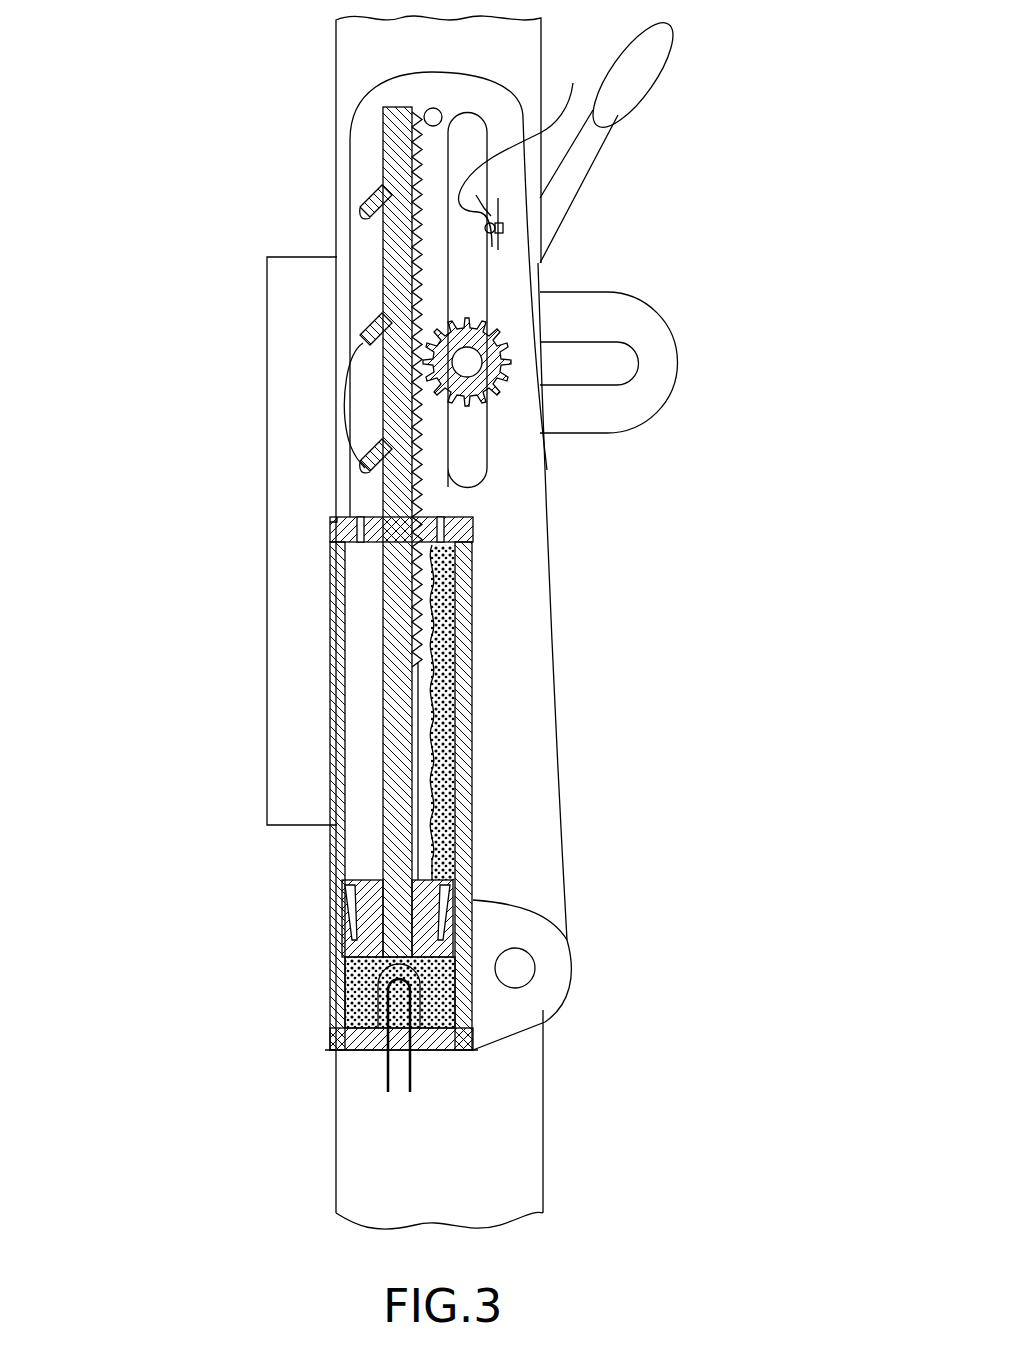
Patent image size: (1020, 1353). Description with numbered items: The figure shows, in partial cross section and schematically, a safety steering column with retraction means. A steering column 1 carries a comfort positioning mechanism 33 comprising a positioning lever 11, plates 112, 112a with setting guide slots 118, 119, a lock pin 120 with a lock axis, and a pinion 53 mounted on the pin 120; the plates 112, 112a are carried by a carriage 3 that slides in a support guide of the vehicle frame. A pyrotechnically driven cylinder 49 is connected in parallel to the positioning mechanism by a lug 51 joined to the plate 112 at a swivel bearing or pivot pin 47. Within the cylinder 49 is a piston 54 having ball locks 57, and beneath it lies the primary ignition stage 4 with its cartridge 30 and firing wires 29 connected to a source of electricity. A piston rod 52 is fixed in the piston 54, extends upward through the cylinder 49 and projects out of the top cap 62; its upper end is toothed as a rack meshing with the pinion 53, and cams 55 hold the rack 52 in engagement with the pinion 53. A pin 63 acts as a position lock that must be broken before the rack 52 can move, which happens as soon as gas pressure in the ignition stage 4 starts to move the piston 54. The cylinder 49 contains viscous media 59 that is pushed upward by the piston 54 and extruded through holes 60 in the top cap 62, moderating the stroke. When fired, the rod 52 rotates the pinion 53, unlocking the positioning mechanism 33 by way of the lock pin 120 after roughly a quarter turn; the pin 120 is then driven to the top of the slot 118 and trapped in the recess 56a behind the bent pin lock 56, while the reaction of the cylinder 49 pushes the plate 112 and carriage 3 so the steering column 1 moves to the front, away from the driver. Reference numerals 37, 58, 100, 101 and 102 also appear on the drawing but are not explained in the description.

The steering column 1 is at (532, 1160).
The carriage 3 is at (285, 745).
The primary ignition stage 4 is at (352, 1040).
The positioning lever 11 is at (647, 70).
The firing wires 29 is at (395, 1085).
The cartridge 30 is at (355, 995).
The comfort positioning mechanism 33 is at (632, 205).
The outlet direction arrow 37 is at (455, 1070).
The pivot pin 47 is at (530, 968).
The pyrotechnically driven cylinder 49 is at (352, 615).
The lug 51 is at (553, 942).
The piston rod 52 is at (402, 433).
The pinion 53 is at (423, 321).
The piston 54 is at (360, 885).
The cams 55 is at (350, 462).
The bent pin lock 56 is at (524, 150).
The recess 56a is at (497, 180).
The ball locks 57 is at (355, 940).
The lower material 58 is at (445, 770).
The viscous media 59 is at (445, 630).
The holes 60 is at (466, 517).
The top cap 62 is at (330, 525).
The pin 63 is at (430, 110).
The actuator assembly 100 is at (614, 726).
The device 101 is at (206, 95).
The dispensing assembly 102 is at (268, 969).
The plate 112 is at (535, 690).
The plate 112a is at (652, 398).
The vertical slot 118 is at (475, 290).
The horizontal slot 119 is at (625, 352).
The lock pin 120 is at (470, 364).